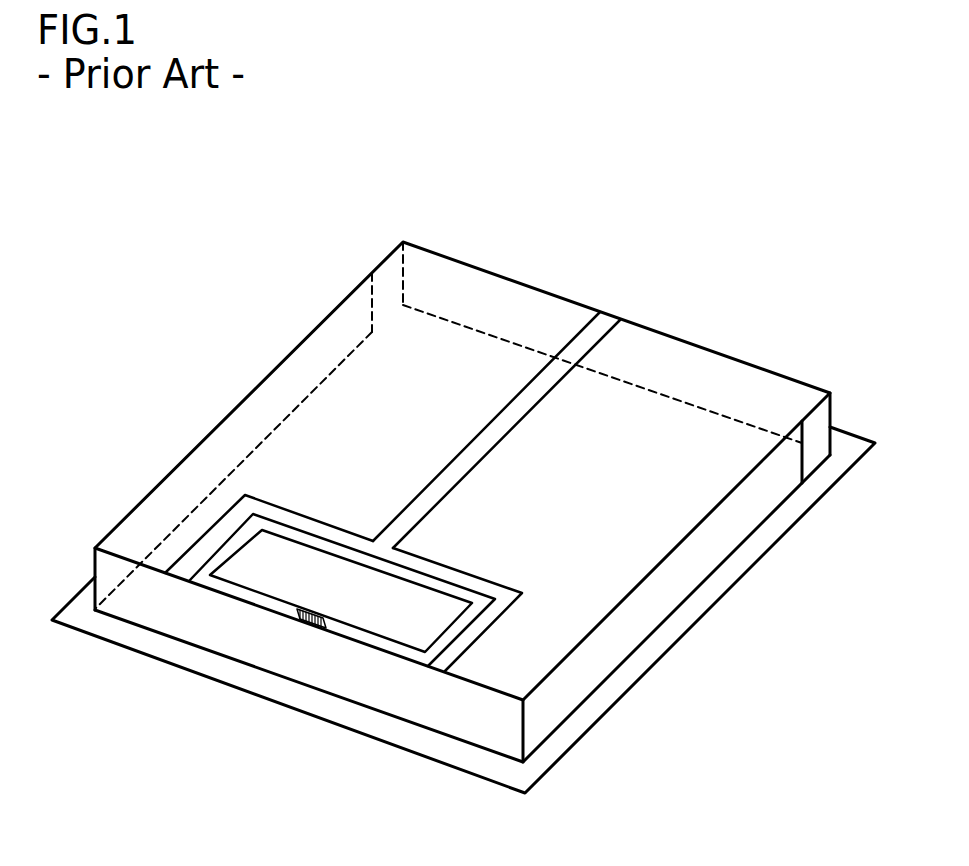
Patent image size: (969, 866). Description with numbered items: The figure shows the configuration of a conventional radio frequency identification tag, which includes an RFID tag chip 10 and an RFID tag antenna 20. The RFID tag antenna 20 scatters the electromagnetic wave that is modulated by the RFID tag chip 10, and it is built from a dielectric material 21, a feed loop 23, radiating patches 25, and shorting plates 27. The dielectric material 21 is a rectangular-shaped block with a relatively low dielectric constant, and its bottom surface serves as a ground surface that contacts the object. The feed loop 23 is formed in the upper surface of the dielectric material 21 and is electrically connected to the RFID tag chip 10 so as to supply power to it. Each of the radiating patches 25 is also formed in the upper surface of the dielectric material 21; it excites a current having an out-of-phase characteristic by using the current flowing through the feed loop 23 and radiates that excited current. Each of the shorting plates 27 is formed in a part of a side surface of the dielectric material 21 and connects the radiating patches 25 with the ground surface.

The RFID tag chip 10 is at (293, 630).
The RFID tag antenna 20 is at (342, 325).
The dielectric material 21 is at (672, 594).
The feed loop 23 is at (395, 655).
The radiating patches 25 is at (504, 485).
The shorting plates 27 is at (818, 432).